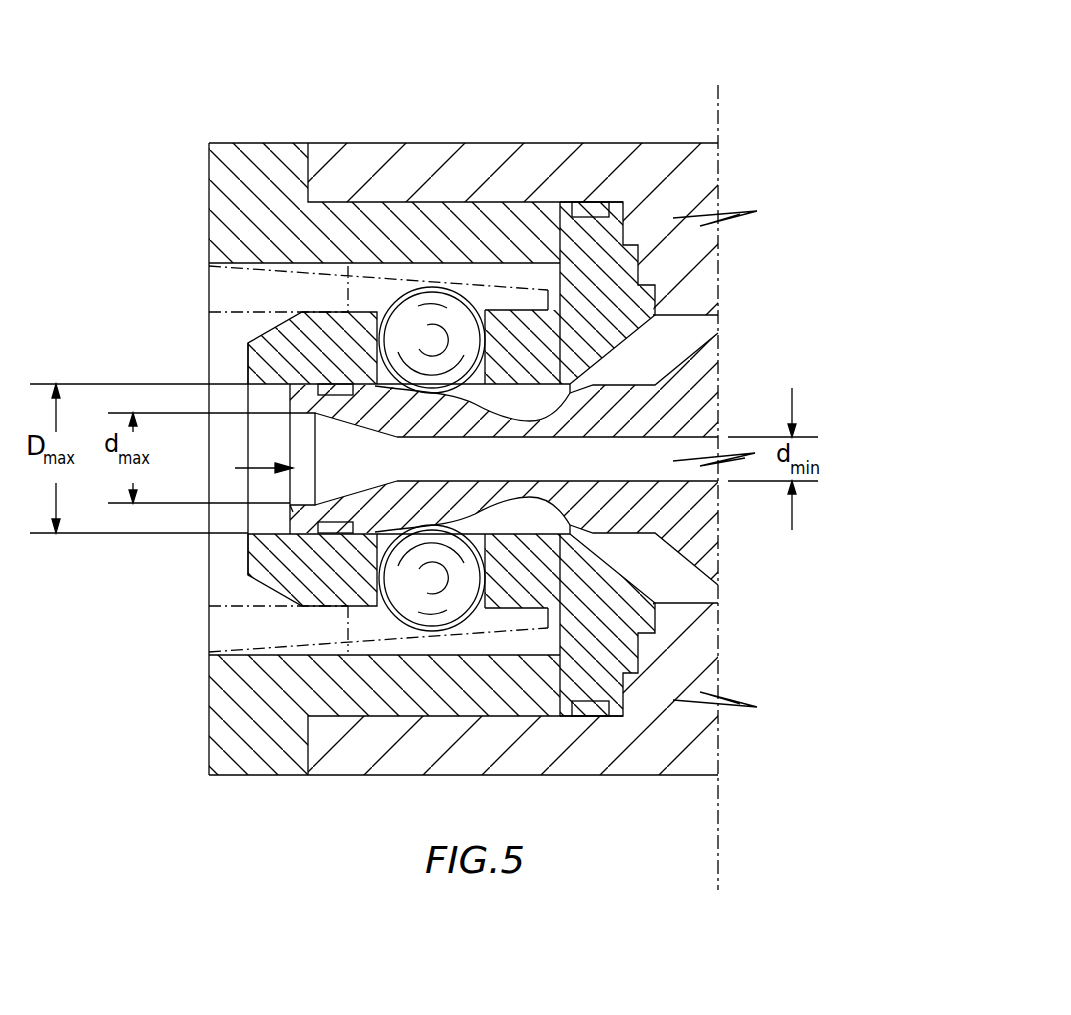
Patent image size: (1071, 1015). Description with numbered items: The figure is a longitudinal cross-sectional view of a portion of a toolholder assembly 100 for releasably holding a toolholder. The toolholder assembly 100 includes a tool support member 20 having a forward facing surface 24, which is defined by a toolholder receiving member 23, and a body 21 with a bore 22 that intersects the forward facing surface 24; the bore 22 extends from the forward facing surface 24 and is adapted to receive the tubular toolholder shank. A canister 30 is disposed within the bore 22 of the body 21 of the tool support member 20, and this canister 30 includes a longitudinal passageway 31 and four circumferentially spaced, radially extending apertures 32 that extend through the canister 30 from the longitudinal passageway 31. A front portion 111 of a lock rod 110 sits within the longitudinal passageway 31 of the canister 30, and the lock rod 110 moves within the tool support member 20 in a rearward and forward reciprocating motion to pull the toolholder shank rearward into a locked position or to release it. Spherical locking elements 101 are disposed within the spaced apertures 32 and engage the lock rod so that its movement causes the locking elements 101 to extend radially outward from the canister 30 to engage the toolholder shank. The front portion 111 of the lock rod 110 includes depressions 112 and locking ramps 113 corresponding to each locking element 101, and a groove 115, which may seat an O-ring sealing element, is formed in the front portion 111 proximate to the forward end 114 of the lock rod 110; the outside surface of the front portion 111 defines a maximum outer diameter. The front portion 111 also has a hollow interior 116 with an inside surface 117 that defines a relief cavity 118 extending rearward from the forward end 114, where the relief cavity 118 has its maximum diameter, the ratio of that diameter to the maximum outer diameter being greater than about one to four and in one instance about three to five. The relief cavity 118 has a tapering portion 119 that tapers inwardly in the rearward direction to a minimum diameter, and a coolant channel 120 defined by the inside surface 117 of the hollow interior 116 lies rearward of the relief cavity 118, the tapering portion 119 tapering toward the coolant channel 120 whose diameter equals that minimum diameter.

The toolholder assembly 100 is at (516, 78).
The tool support member 20 is at (628, 143).
The body 21 is at (375, 776).
The bore 22 is at (327, 202).
The toolholder receiving member 23 is at (209, 705).
The forward facing surface 24 is at (209, 158).
The canister 30 is at (262, 550).
The longitudinal passageway 31 is at (261, 392).
The apertures 32 is at (488, 367).
The locking elements 101 is at (417, 325).
The lock rod 110 is at (614, 384).
The front portion 111 is at (293, 512).
The depressions 112 is at (501, 459).
The locking ramps 113 is at (404, 394).
The forward end 114 is at (290, 408).
The groove 115 is at (335, 384).
The hollow interior 116 is at (235, 468).
The inside surface 117 is at (300, 498).
The relief cavity 118 is at (323, 434).
The tapering portion 119 is at (350, 428).
The coolant channel 120 is at (540, 434).